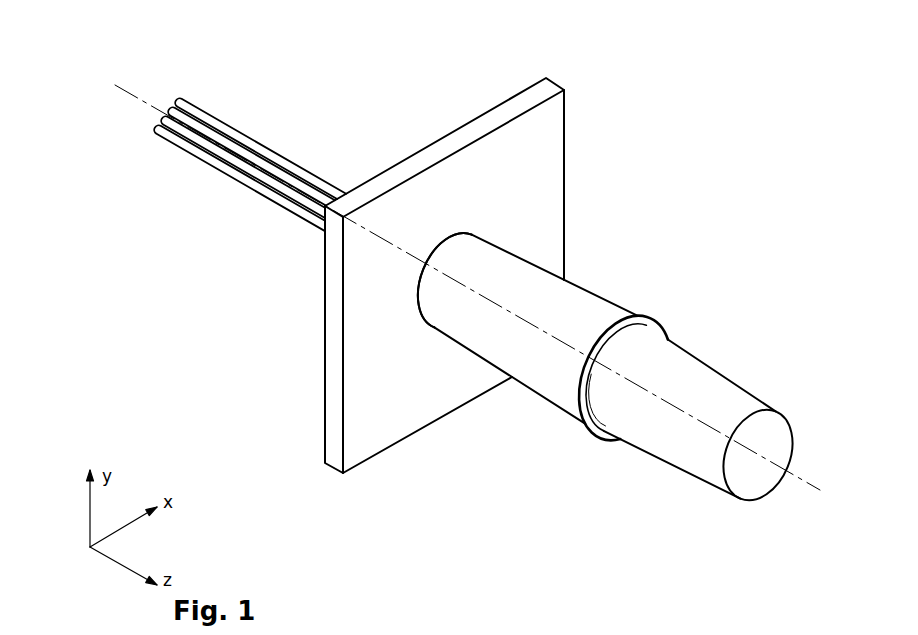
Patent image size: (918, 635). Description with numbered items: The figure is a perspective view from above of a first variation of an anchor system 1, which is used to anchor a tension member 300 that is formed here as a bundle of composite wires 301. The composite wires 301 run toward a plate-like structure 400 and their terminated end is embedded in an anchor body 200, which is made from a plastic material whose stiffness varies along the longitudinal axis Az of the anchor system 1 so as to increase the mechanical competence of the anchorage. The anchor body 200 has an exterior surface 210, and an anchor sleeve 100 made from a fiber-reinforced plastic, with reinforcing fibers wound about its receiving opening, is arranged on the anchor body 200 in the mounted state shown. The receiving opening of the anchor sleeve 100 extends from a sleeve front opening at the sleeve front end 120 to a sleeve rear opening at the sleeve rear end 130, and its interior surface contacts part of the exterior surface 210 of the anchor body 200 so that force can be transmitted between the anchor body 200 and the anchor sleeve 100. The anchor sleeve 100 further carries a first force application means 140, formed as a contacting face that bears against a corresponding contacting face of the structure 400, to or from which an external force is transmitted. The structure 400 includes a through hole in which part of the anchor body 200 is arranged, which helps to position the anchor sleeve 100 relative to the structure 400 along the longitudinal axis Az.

The anchor system 1 is at (92, 52).
The anchor sleeve 100 is at (580, 289).
The sleeve front end 120 is at (469, 237).
The sleeve rear end 130 is at (634, 314).
The first force application means 140 is at (418, 296).
The anchor body 200 is at (702, 358).
The exterior surface 210 is at (591, 376).
The tension member 300 is at (242, 194).
The composite wires 301 is at (228, 166).
The structure 400 is at (470, 109).
The longitudinal axis Az is at (713, 432).